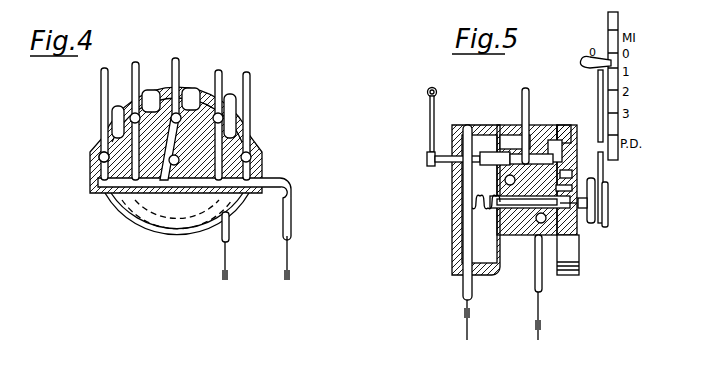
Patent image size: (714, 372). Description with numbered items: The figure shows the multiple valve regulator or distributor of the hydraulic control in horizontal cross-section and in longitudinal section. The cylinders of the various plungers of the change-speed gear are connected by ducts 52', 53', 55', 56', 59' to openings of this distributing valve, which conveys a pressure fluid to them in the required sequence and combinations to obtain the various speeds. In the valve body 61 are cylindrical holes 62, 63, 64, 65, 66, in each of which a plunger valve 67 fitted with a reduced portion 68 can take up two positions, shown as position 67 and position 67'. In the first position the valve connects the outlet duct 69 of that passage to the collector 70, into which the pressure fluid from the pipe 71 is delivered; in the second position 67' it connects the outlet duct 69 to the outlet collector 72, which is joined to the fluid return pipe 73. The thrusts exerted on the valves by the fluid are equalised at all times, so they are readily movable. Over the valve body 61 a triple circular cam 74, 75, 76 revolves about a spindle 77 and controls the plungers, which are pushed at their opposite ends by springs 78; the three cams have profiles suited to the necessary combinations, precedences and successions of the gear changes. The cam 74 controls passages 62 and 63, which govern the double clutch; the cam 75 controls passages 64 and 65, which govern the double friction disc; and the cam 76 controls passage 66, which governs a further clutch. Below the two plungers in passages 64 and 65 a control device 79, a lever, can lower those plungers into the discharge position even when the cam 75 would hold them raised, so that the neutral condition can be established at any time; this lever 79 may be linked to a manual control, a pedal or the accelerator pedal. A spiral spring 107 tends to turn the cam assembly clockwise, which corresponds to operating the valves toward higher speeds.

In FIG. 4, the duct 52' is at (231, 108).
In FIG. 4, the duct 53' is at (147, 109).
In FIG. 4, the duct 55' is at (263, 118).
In FIG. 4, the duct 56' is at (89, 124).
In FIG. 4, the duct 59' is at (184, 112).
In FIG. 4, the valve body 61 is at (256, 170).
In FIG. 5, the valve body 61 is at (536, 286).
In FIG. 4, the cylindrical hole 62 is at (253, 149).
In FIG. 4, the cylindrical hole 63 is at (96, 158).
In FIG. 4, the cylindrical hole 64 is at (120, 118).
In FIG. 4, the cylindrical hole 65 is at (170, 92).
In FIG. 4, the cylindrical hole 66 is at (163, 103).
In FIG. 5, the plunger valve 67 is at (527, 197).
In FIG. 5, the plunger valve in second position 67' is at (515, 129).
In FIG. 5, the reduced portion 68 is at (515, 135).
In FIG. 5, the outlet duct 69 is at (526, 90).
In FIG. 5, the collector 70 is at (568, 255).
In FIG. 4, the pipe 71 is at (292, 205).
In FIG. 5, the pipe 71 is at (544, 288).
In FIG. 5, the outlet collector 72 is at (505, 181).
In FIG. 4, the fluid return pipe 73 is at (229, 231).
In FIG. 5, the fluid return pipe 73 is at (464, 293).
In FIG. 5, the cam 74 is at (562, 134).
In FIG. 5, the cam 75 is at (560, 136).
In FIG. 5, the cam 76 is at (575, 128).
In FIG. 5, the spindle 77 is at (589, 226).
In FIG. 5, the spring 78 is at (473, 126).
In FIG. 5, the control device 79 is at (429, 130).
In FIG. 5, the spiral spring 107 is at (578, 214).